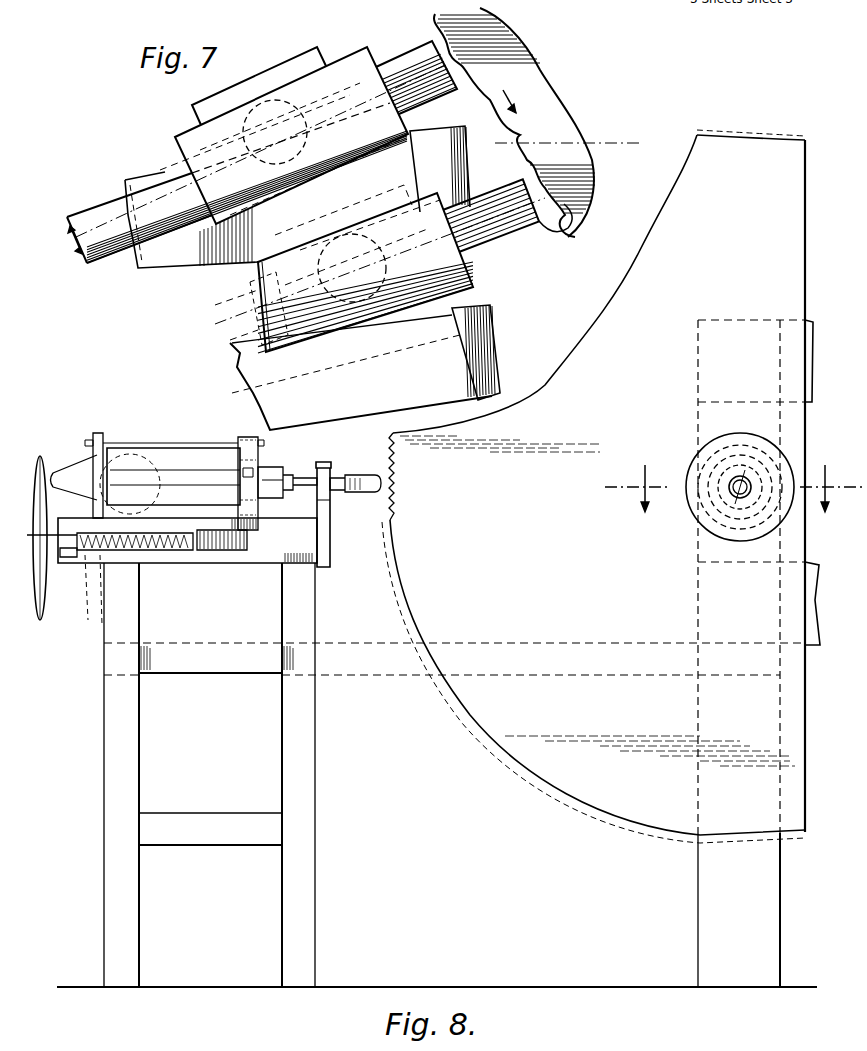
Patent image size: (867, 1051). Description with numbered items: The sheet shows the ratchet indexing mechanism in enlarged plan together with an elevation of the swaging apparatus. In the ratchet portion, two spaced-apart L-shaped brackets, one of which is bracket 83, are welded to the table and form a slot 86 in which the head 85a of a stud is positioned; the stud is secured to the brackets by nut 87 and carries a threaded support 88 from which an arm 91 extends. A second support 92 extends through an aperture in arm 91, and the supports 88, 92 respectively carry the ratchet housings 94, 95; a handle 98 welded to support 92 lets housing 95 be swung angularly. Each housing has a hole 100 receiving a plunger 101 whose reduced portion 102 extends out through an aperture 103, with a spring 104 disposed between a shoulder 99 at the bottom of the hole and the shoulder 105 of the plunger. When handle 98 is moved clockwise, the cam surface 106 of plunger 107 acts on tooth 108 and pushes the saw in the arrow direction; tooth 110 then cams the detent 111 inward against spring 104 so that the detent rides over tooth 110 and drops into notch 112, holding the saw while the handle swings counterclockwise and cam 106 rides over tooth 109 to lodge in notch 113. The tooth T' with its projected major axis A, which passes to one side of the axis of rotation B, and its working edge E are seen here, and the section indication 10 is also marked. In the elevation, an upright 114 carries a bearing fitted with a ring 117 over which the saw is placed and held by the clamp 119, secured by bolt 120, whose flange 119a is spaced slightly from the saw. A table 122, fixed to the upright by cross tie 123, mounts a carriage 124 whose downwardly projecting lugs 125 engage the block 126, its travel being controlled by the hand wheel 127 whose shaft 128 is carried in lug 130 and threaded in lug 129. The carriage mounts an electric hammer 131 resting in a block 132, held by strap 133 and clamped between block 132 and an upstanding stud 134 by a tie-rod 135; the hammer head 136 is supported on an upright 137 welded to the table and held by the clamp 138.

In FIG. 7, the L-shaped bracket 83 is at (457, 125).
In FIG. 7, the stud head 85a is at (445, 328).
In FIG. 7, the slot 86 is at (250, 392).
In FIG. 7, the nut 87 is at (383, 368).
In FIG. 7, the support 88 is at (342, 246).
In FIG. 7, the arm 91 is at (192, 107).
In FIG. 7, the support 92 is at (288, 100).
In FIG. 7, the ratchet housing 94 is at (395, 212).
In FIG. 7, the ratchet housing 95 is at (340, 52).
In FIG. 7, the handle 98 is at (90, 207).
In FIG. 7, the shoulder 99 is at (258, 302).
In FIG. 7, the hole 100 is at (250, 290).
In FIG. 7, the plunger 101 is at (548, 232).
In FIG. 7, the reduced portion 102 is at (470, 298).
In FIG. 7, the aperture 103 is at (262, 322).
In FIG. 7, the spring 104 is at (518, 250).
In FIG. 7, the plunger shoulder 105 is at (470, 258).
In FIG. 7, the cam surface 106 is at (503, 50).
In FIG. 7, the plunger 107 is at (408, 60).
In FIG. 7, the tooth 108 is at (508, 70).
In FIG. 7, the tooth 109 is at (500, 36).
In FIG. 7, the tooth 110 is at (585, 200).
In FIG. 7, the detent 111 is at (568, 232).
In FIG. 7, the notch 112 is at (585, 168).
In FIG. 7, the notch 113 is at (438, 32).
In FIG. 8, the upright 114 is at (710, 886).
In FIG. 8, the ring 117 is at (712, 516).
In FIG. 8, the clamp 119 is at (712, 490).
In FIG. 8, the flange 119a is at (760, 448).
In FIG. 8, the bolt 120 is at (740, 500).
In FIG. 8, the table 122 is at (300, 802).
In FIG. 8, the cross tie 123 is at (353, 670).
In FIG. 8, the carriage 124 is at (218, 550).
In FIG. 8, the lug 125 is at (85, 575).
In FIG. 8, the block 126 is at (208, 552).
In FIG. 8, the hand wheel 127 is at (40, 620).
In FIG. 8, the shaft 128 is at (100, 600).
In FIG. 8, the lug 129 is at (133, 552).
In FIG. 8, the lug 130 is at (72, 557).
In FIG. 8, the electric hammer 131 is at (172, 450).
In FIG. 8, the block 132 is at (252, 508).
In FIG. 8, the strap 133 is at (252, 462).
In FIG. 8, the upstanding stud 134 is at (92, 455).
In FIG. 8, the tie-rod 135 is at (135, 445).
In FIG. 8, the hammer head 136 is at (370, 476).
In FIG. 8, the upright 137 is at (328, 528).
In FIG. 8, the clamp 138 is at (326, 478).
In FIG. 8, the section line 10 is at (733, 479).
In FIG. 7, the projected major axis A is at (592, 140).
In FIG. 8, the axis of rotation B is at (730, 482).
In FIG. 7, the working edge E is at (517, 135).
In FIG. 7, the tooth T' is at (499, 153).